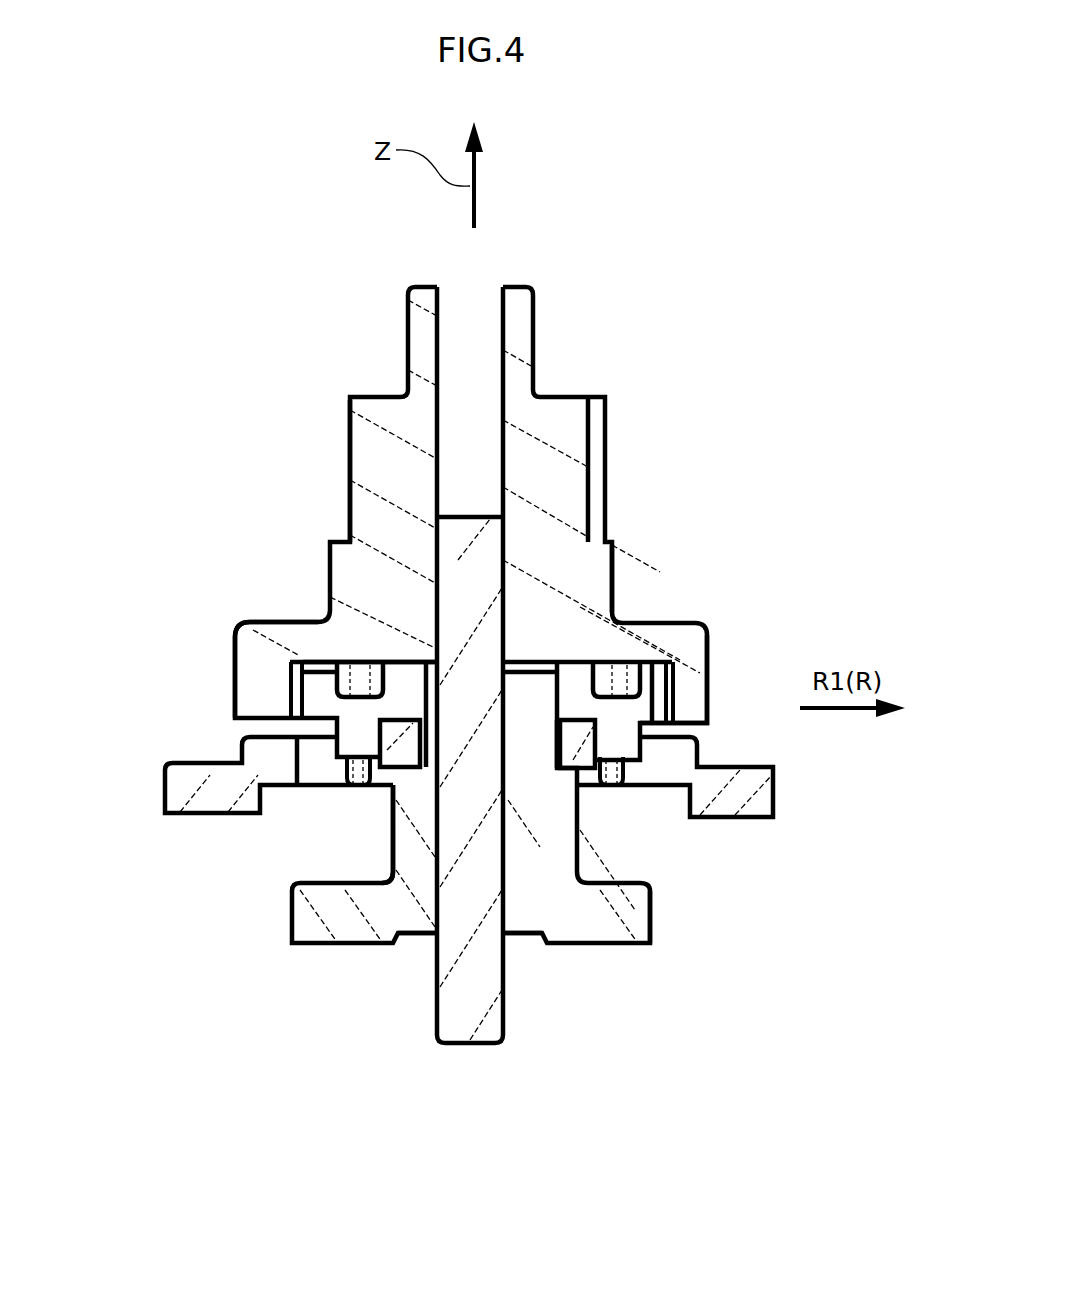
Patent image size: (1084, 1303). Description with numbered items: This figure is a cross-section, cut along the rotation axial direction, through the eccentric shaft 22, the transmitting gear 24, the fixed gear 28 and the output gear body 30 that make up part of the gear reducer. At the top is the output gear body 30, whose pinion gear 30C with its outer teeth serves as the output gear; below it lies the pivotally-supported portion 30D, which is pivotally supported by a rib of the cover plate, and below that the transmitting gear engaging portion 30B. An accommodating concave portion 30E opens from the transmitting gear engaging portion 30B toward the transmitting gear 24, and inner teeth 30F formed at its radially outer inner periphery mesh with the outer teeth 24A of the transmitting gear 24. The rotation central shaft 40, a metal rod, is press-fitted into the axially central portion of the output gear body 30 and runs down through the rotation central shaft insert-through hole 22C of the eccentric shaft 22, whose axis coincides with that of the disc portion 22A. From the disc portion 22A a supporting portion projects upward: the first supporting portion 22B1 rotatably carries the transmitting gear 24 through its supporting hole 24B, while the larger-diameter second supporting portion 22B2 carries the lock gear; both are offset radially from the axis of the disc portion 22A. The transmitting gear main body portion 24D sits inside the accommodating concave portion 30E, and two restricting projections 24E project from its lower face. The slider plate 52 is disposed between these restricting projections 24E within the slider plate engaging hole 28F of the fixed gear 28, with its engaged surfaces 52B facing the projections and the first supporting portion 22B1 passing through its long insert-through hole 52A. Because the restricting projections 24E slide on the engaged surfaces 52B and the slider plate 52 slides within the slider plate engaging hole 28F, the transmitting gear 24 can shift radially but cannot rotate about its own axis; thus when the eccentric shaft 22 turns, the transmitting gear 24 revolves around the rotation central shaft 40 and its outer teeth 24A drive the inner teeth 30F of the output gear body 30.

The output gear body 30 is at (530, 282).
The transmitting gear engaging portion 30B is at (710, 687).
The pinion gear 30C is at (607, 423).
The pivotally-supported portion 30D is at (617, 597).
The accommodating concave portion 30E is at (398, 660).
The inner teeth 30F is at (247, 620).
The transmitting gear 24 is at (578, 676).
The outer teeth 24A is at (288, 690).
The supporting hole 24B is at (558, 612).
The transmitting gear main body portion 24D is at (670, 668).
The restricting projections 24E is at (362, 738).
The fixed gear 28 is at (785, 801).
The slider plate engaging hole 28F is at (296, 765).
The slider plate 52 is at (393, 813).
The insert-through hole 52A is at (585, 778).
The engaged surfaces 52B is at (362, 778).
The eccentric shaft 22 is at (612, 960).
The disc portion 22A is at (655, 915).
The first supporting portion 22B1 is at (345, 660).
The second supporting portion 22B2 is at (385, 880).
The rotation central shaft insert-through hole 22C is at (495, 915).
The rotation central shaft 40 is at (480, 1046).